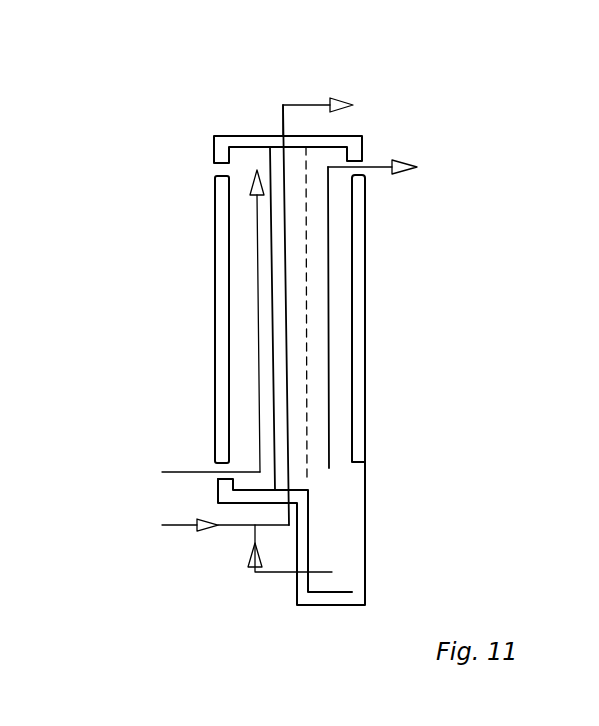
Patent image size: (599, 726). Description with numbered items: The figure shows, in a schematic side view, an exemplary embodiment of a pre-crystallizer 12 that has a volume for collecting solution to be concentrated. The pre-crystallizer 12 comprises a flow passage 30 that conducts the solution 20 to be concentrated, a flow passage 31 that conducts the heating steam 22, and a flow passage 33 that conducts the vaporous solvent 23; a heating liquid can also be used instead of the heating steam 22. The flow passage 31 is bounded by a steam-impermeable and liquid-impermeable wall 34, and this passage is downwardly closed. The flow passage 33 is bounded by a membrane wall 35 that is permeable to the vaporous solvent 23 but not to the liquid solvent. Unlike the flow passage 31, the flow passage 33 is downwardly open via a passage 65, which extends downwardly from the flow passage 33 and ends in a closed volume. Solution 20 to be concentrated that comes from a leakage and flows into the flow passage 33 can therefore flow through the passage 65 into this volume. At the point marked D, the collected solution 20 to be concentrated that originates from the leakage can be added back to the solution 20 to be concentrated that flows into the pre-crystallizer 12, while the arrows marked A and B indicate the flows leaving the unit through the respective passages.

The pre-crystallizer 12 is at (127, 155).
The solution to be concentrated 20 is at (295, 104).
The heating steam 22 is at (172, 470).
The vaporous solvent 23 is at (373, 167).
The flow passage 30 is at (303, 433).
The flow passage 31 is at (245, 348).
The flow passage 33 is at (315, 353).
The steam-impermeable and liquid-impermeable wall 34 is at (273, 357).
The membrane wall 35 is at (305, 193).
The passage 65 is at (330, 543).